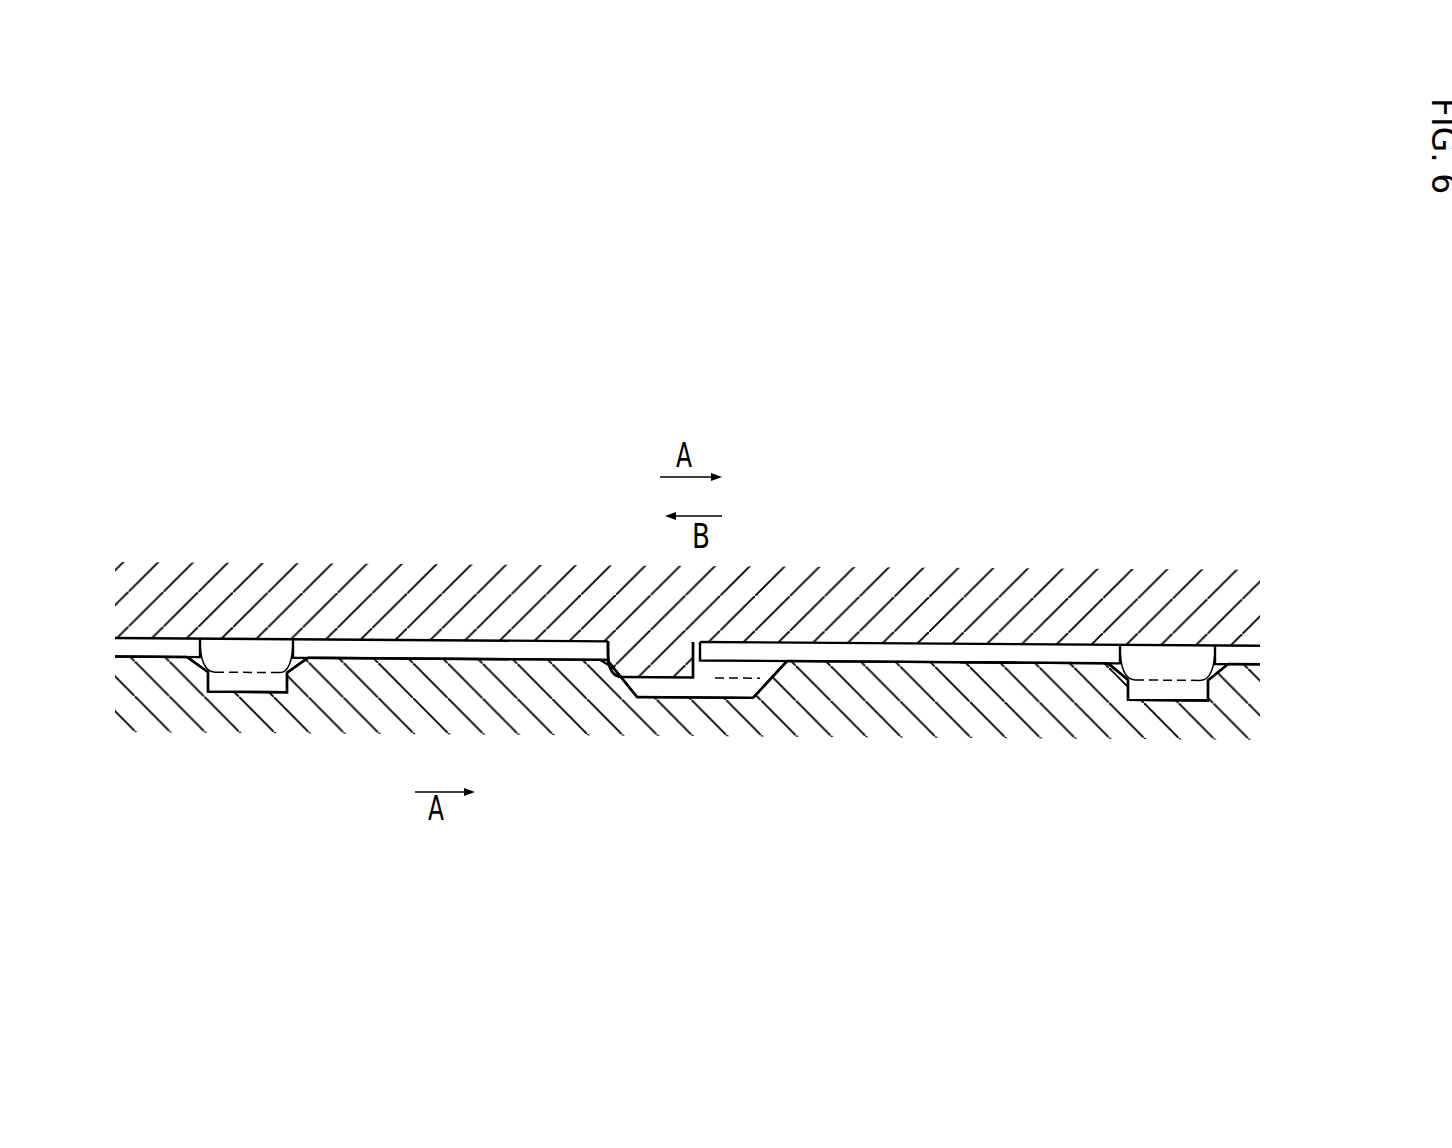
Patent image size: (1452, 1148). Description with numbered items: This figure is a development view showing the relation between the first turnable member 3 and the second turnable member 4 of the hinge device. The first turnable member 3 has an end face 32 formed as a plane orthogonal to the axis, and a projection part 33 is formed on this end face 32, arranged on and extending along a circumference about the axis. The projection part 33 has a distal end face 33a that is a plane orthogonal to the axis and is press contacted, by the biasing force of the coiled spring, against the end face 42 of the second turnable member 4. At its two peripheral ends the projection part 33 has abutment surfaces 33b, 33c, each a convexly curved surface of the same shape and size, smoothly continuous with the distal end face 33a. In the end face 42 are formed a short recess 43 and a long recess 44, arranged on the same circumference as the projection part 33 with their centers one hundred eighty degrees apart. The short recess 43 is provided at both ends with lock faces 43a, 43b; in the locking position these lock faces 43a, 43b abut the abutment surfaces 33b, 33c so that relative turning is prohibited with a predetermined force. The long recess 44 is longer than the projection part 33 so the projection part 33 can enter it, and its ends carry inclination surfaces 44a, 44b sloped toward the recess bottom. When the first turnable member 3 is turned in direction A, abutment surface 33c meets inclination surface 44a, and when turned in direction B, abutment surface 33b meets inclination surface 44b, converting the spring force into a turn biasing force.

The first turnable member 3 is at (893, 590).
The second turnable member 4 is at (950, 715).
The end face 32 is at (1019, 648).
The projection part 33 is at (267, 677).
The distal end face 33a is at (673, 700).
The abutment surface 33b is at (300, 673).
The abutment surface 33c is at (193, 665).
The end face 42 is at (990, 660).
The short recess 43 is at (245, 691).
The lock face 43a is at (288, 665).
The lock face 43b is at (205, 667).
The long recess 44 is at (737, 676).
The inclination surface 44a is at (633, 668).
The inclination surface 44b is at (786, 661).